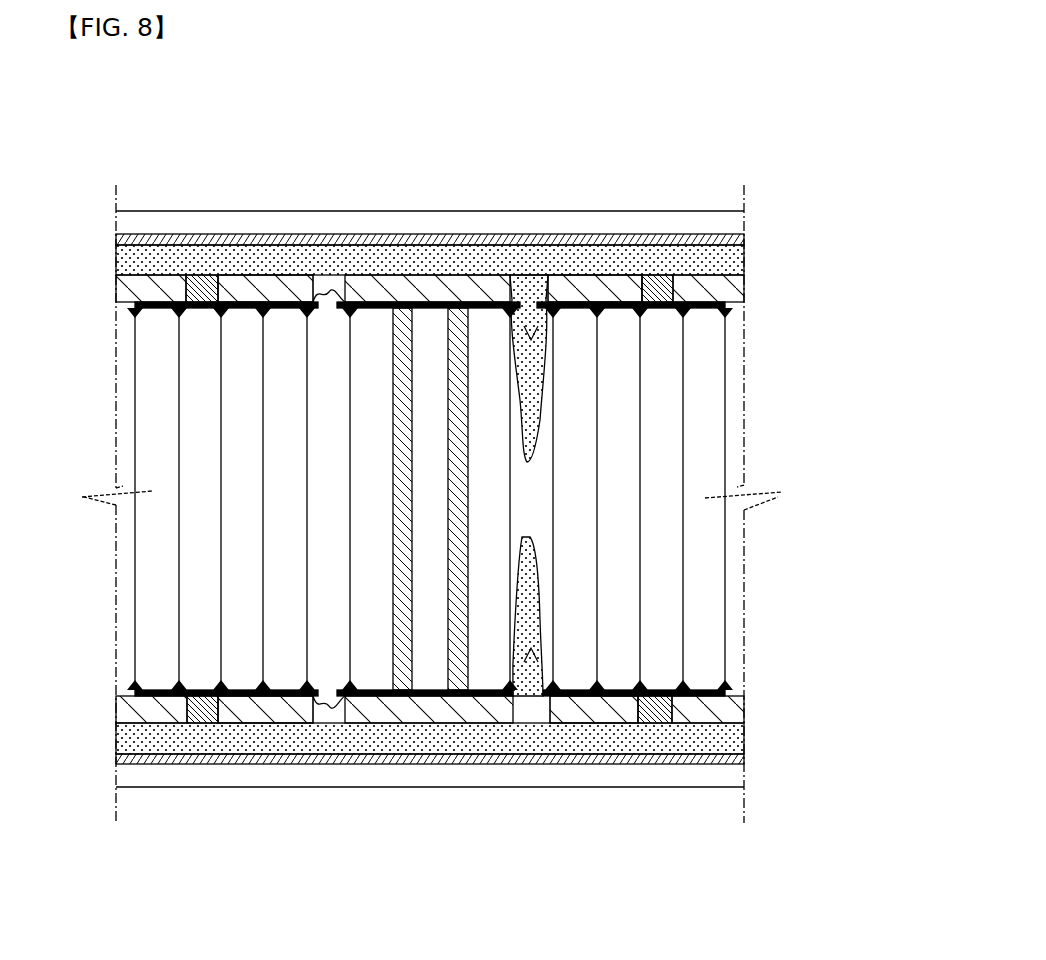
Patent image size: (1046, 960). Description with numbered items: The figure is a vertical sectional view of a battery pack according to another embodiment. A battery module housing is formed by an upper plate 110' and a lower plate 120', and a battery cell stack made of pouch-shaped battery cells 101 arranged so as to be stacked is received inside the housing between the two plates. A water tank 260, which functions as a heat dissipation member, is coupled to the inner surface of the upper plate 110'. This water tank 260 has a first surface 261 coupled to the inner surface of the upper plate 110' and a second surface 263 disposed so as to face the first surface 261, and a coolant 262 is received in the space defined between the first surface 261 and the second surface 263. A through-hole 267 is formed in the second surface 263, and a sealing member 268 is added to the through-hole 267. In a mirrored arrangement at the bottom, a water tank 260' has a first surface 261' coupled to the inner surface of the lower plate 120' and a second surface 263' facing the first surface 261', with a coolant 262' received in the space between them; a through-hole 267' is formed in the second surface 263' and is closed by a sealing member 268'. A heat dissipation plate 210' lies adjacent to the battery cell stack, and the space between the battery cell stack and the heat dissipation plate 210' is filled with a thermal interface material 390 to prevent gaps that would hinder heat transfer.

The upper plate 110' is at (430, 160).
The lower plate 120' is at (430, 840).
The pouch-shaped battery cells 101 is at (703, 566).
The heat dissipation plate 210' is at (595, 228).
The water tank 260 is at (519, 226).
The first surface 261 is at (482, 246).
The coolant 262 is at (478, 269).
The second surface 263 is at (487, 300).
The through-hole 267 is at (150, 214).
The sealing member 268 is at (429, 214).
The water tank 260' is at (524, 796).
The first surface 261' is at (475, 774).
The coolant 262' is at (475, 738).
The second surface 263' is at (485, 706).
The through-hole 267' is at (151, 799).
The sealing member 268' is at (426, 774).
The thermal interface material 390 is at (598, 700).